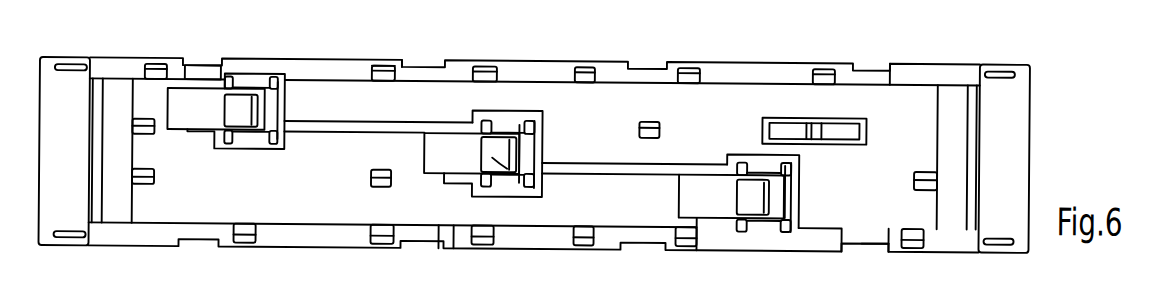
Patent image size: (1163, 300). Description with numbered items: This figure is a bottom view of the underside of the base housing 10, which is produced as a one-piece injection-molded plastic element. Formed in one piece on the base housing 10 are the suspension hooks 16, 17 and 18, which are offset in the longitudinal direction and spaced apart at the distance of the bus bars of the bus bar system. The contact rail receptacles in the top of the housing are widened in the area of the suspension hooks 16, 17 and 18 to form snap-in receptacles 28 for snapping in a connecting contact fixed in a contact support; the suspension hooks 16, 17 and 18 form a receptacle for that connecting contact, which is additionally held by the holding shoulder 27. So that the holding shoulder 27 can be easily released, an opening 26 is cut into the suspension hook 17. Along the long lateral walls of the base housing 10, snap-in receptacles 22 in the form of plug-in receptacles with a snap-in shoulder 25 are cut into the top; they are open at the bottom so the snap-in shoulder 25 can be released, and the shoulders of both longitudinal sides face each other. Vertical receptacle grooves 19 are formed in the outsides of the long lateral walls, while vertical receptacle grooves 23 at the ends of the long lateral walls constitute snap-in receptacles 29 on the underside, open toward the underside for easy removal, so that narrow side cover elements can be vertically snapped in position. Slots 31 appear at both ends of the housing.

The base housing 10 is at (513, 46).
The suspension hook 16 is at (200, 97).
The suspension hook 17 is at (440, 154).
The suspension hook 18 is at (710, 198).
The vertical receptacle groove 19 is at (872, 58).
The snap-in receptacle 22 is at (378, 72).
The vertical receptacle groove 23 is at (845, 271).
The snap-in shoulder 25 is at (385, 62).
The opening 26 is at (493, 154).
The holding shoulder 27 is at (510, 151).
The snap-in receptacle 28 is at (543, 134).
The snap-in receptacle 29 is at (763, 240).
The mounting slot 31 is at (71, 62).